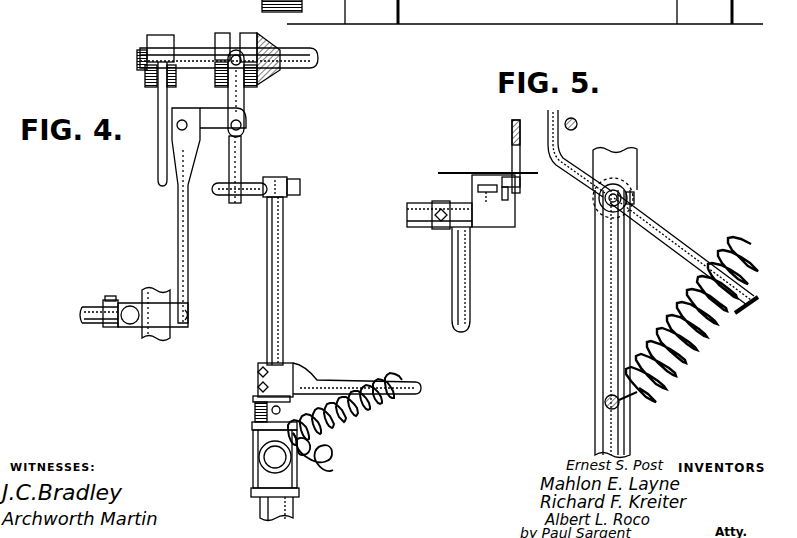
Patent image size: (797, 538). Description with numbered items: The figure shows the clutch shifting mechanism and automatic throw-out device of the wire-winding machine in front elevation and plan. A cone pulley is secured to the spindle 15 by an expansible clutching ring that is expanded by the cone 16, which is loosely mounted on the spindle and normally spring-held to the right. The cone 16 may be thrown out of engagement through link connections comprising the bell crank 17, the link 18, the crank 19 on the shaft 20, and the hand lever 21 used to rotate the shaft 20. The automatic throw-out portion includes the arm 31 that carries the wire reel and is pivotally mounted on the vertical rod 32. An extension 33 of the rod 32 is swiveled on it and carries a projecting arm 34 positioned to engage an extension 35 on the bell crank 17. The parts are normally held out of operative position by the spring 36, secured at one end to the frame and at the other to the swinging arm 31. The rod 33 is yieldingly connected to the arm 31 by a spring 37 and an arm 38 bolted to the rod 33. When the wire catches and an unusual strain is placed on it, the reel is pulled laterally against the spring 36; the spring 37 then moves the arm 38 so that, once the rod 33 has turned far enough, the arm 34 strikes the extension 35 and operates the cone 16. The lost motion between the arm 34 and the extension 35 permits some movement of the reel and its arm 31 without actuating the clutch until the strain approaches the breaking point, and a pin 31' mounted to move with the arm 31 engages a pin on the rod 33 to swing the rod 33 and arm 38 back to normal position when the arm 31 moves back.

In FIG. 4, the spindle 15 is at (192, 50).
In FIG. 4, the cone 16 is at (247, 33).
In FIG. 4, the bell crank 17 is at (242, 100).
In FIG. 4, the link 18 is at (178, 229).
In FIG. 5, the link 18 is at (508, 132).
In FIG. 4, the crank 19 is at (173, 330).
In FIG. 5, the crank 19 is at (510, 195).
In FIG. 4, the shaft 20 is at (90, 306).
In FIG. 5, the shaft 20 is at (415, 218).
In FIG. 4, the hand lever 21 is at (128, 325).
In FIG. 5, the hand lever 21 is at (457, 272).
In FIG. 4, the arm 31 is at (255, 463).
In FIG. 5, the arm 31 is at (595, 324).
In FIG. 4, the pin 31' is at (246, 403).
In FIG. 4, the vertical rod 32 is at (262, 508).
In FIG. 4, the extension 33 is at (278, 284).
In FIG. 5, the extension 33 is at (628, 190).
In FIG. 4, the projecting arm 34 is at (224, 195).
In FIG. 5, the projecting arm 34 is at (577, 171).
In FIG. 4, the extension 35 is at (238, 157).
In FIG. 5, the extension 35 is at (578, 123).
In FIG. 4, the spring 36 is at (333, 468).
In FIG. 5, the spring 36 is at (725, 243).
In FIG. 4, the spring 37 is at (367, 420).
In FIG. 5, the spring 37 is at (700, 348).
In FIG. 4, the arm 38 is at (343, 388).
In FIG. 5, the arm 38 is at (667, 242).